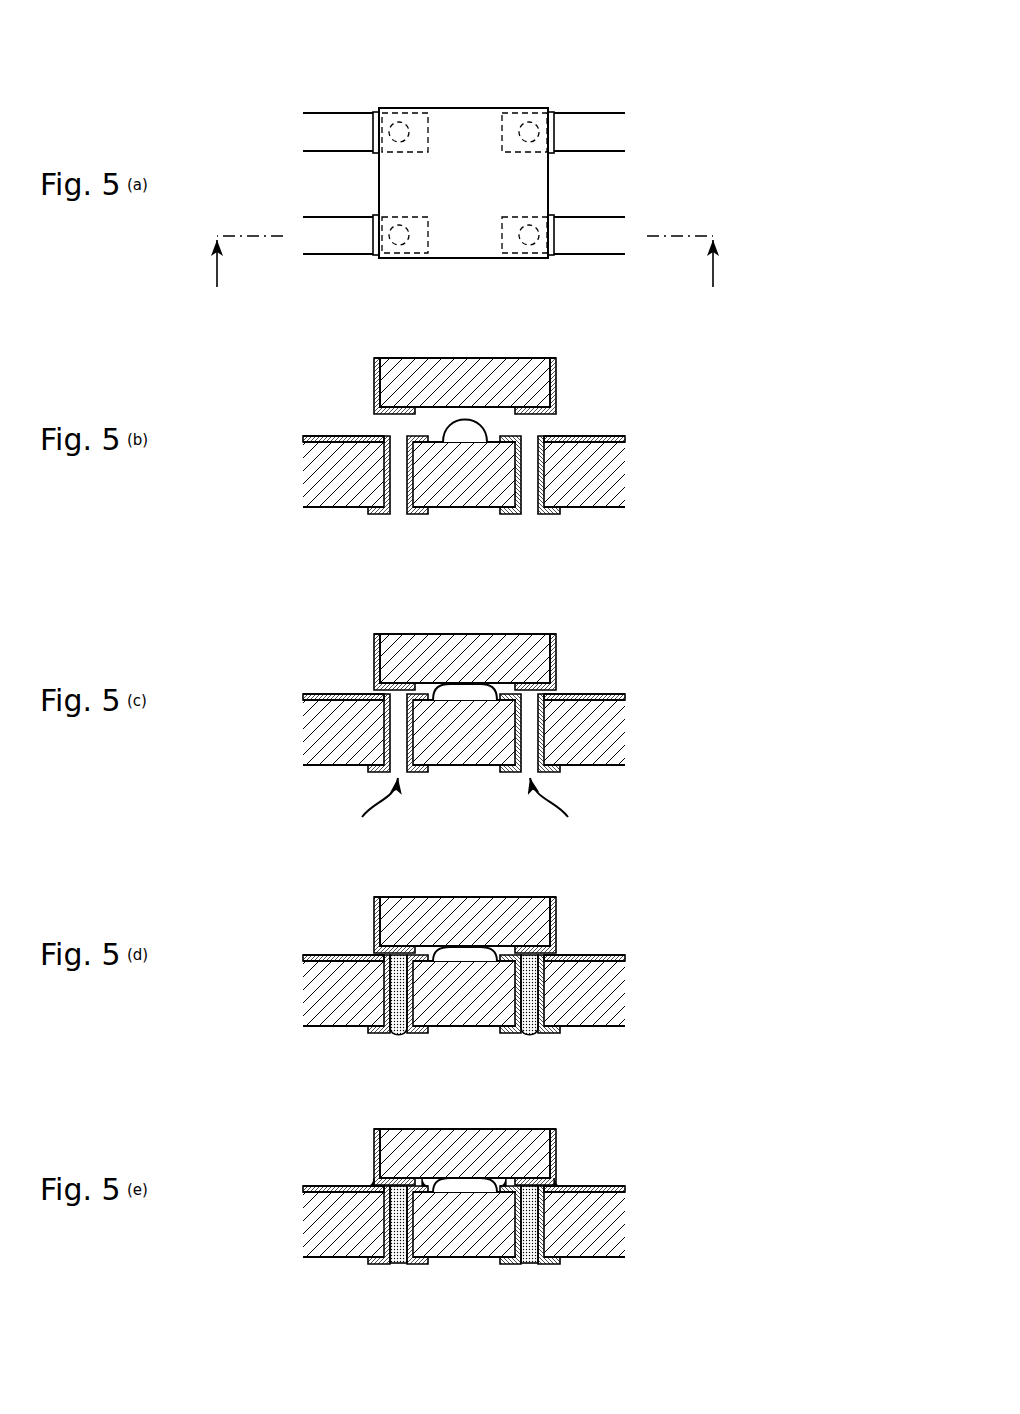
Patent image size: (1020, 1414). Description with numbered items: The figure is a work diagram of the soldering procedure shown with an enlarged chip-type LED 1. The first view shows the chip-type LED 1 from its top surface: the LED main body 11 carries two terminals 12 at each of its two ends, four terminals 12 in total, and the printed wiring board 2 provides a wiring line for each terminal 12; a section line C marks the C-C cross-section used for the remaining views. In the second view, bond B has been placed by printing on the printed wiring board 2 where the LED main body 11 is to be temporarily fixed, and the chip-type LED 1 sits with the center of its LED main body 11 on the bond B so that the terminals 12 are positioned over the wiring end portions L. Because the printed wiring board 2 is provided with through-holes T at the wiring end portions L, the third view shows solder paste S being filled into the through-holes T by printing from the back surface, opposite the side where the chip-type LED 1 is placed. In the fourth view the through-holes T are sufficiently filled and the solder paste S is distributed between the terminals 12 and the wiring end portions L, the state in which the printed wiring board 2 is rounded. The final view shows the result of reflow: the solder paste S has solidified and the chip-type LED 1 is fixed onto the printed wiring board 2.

In FIG. 5A, the chip-type LED 1 is at (465, 154).
In FIG. 5B, the chip-type LED 1 is at (479, 361).
In FIG. 5C, the chip-type LED 1 is at (479, 638).
In FIG. 5D, the chip-type LED 1 is at (479, 901).
In FIG. 5E, the chip-type LED 1 is at (479, 1133).
In FIG. 5A, the LED main body 11 is at (463, 108).
In FIG. 5B, the LED main body 11 is at (463, 357).
In FIG. 5C, the LED main body 11 is at (464, 634).
In FIG. 5D, the LED main body 11 is at (464, 897).
In FIG. 5E, the LED main body 11 is at (464, 1129).
In FIG. 5A, the terminal 12 is at (376, 111).
In FIG. 5B, the terminal 12 is at (374, 380).
In FIG. 5C, the terminal 12 is at (374, 657).
In FIG. 5D, the terminal 12 is at (374, 920).
In FIG. 5E, the terminal 12 is at (374, 1152).
In FIG. 5B, the printed wiring board 2 is at (620, 515).
In FIG. 5C, the printed wiring board 2 is at (610, 777).
In FIG. 5D, the printed wiring board 2 is at (582, 1034).
In FIG. 5E, the printed wiring board 2 is at (582, 1266).
In FIG. 5A, the wiring end portion L is at (338, 113).
In FIG. 5B, the wiring end portion L is at (305, 436).
In FIG. 5C, the wiring end portion L is at (305, 694).
In FIG. 5D, the wiring end portion L is at (305, 955).
In FIG. 5E, the wiring end portion L is at (305, 1186).
In FIG. 5A, the through-hole T is at (400, 123).
In FIG. 5B, the through-hole T is at (396, 514).
In FIG. 5C, the through-hole T is at (399, 691).
In FIG. 5D, the through-hole T is at (464, 994).
In FIG. 5E, the through-hole T is at (464, 1225).
In FIG. 5B, the bond B is at (483, 434).
In FIG. 5C, the bond B is at (456, 686).
In FIG. 5D, the bond B is at (456, 946).
In FIG. 5E, the bond B is at (456, 1178).
In FIG. 5D, the solder paste S is at (400, 1037).
In FIG. 5E, the solder paste S is at (400, 1268).
In FIG. 5A, the C-C cross-section C is at (465, 276).